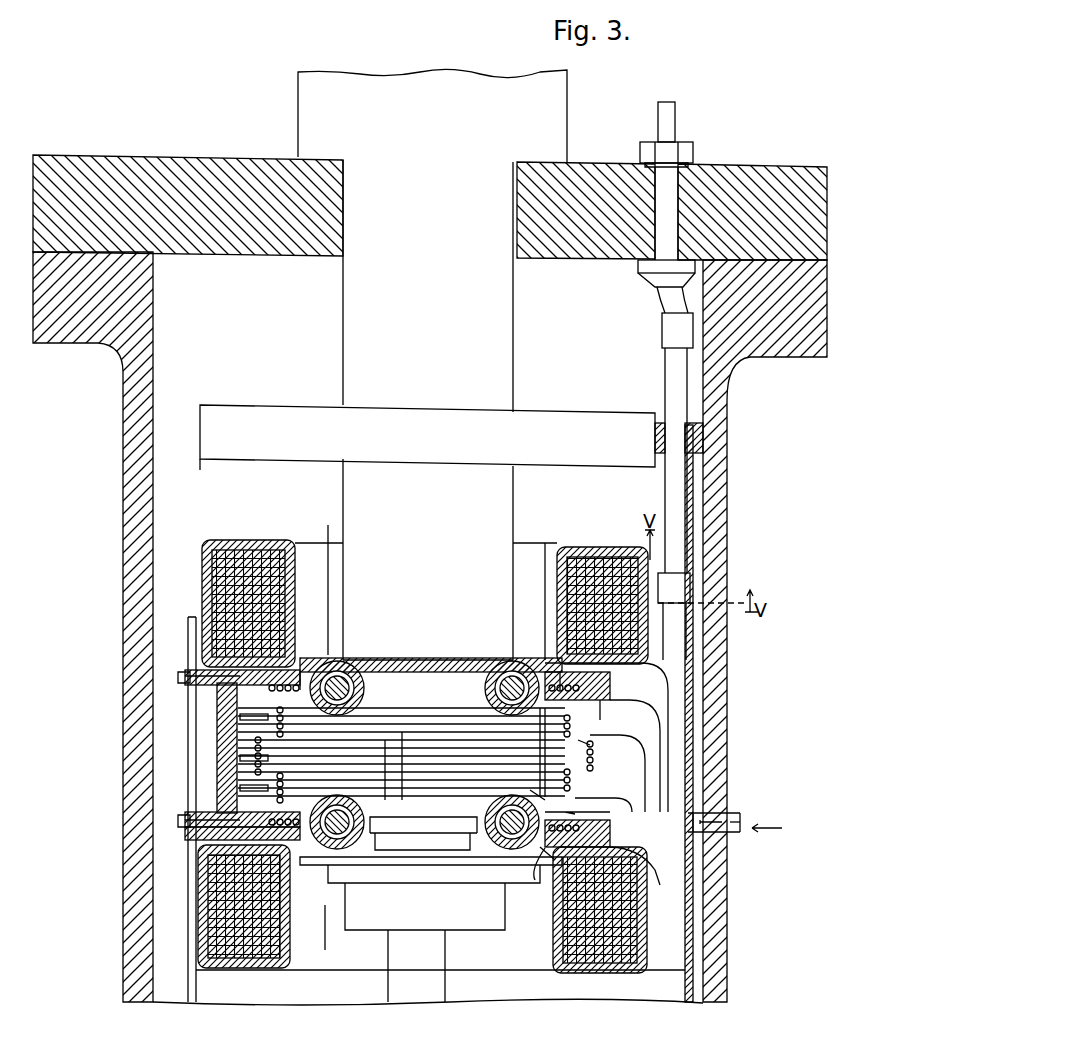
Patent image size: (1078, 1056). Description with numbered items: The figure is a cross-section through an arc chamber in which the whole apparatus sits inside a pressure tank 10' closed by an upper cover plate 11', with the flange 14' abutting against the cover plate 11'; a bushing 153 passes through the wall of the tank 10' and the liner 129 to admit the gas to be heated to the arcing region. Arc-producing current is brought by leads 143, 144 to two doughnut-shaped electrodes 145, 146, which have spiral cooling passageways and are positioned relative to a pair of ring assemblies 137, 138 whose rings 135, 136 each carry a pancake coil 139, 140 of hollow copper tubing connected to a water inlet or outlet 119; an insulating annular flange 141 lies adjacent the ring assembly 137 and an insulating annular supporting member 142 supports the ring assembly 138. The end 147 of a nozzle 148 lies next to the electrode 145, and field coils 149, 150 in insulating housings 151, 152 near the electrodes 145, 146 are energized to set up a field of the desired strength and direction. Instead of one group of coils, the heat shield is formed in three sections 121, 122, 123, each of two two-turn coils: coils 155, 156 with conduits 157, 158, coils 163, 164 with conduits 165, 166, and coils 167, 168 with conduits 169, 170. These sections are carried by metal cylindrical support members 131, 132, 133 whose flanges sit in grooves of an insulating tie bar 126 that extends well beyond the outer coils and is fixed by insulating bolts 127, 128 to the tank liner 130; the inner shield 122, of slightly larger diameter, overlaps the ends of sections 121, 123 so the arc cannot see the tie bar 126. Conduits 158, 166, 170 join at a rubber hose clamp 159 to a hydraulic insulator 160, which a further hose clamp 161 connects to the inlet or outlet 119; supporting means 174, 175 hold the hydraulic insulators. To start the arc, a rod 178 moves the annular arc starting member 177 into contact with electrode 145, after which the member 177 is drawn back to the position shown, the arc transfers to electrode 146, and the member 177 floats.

The pressure tank 10' is at (488, 466).
The upper cover plate 11' is at (430, 198).
The flange 14' is at (430, 628).
The water inlet or outlet 119 is at (676, 110).
The heat shield section 121 is at (293, 712).
The heat shield section 122 is at (250, 740).
The heat shield section 123 is at (293, 800).
The tie bar 126 is at (200, 704).
The insulating bolt 127 is at (192, 675).
The insulating bolt 128 is at (190, 835).
The liner 129 is at (686, 975).
The tank liner 130 is at (192, 618).
The cylindrical support member 131 is at (238, 716).
The cylindrical support member 132 is at (238, 758).
The cylindrical support member 133 is at (238, 788).
The ring 135 is at (547, 660).
The ring 136 is at (612, 832).
The ring assembly 137 is at (652, 699).
The ring assembly 138 is at (646, 828).
The pancake coil 139 is at (602, 708).
The pancake coil 140 is at (552, 850).
The annular flange 141 is at (672, 666).
The annular supporting member 142 is at (662, 855).
The lead 143 is at (328, 573).
The lead 144 is at (325, 930).
The electrode 145 is at (482, 676).
The electrode 146 is at (378, 845).
The nozzle end 147 is at (431, 656).
The nozzle 148 is at (343, 335).
The field coil 149 is at (598, 548).
The field coil 150 is at (585, 955).
The insulating housing 151 is at (566, 545).
The insulating housing 152 is at (605, 972).
The bushing 153 is at (740, 838).
The coil 155 is at (453, 724).
The coil 156 is at (425, 735).
The conduit portion 157 is at (570, 715).
The conduit portion 158 is at (664, 698).
The rubber hose clamp 159 is at (680, 591).
The hydraulic insulator 160 is at (668, 366).
The rubber hose clamp 161 is at (668, 330).
The coil 163 is at (405, 735).
The coil 164 is at (390, 755).
The conduit 165 is at (593, 752).
The conduit 166 is at (648, 740).
The coil 167 is at (415, 780).
The coil 168 is at (432, 788).
The conduit 169 is at (572, 785).
The conduit 170 is at (675, 760).
The supporting means 174 is at (568, 418).
The supporting means 175 is at (692, 428).
The annular arc starting member 177 is at (425, 848).
The rod 178 is at (440, 958).